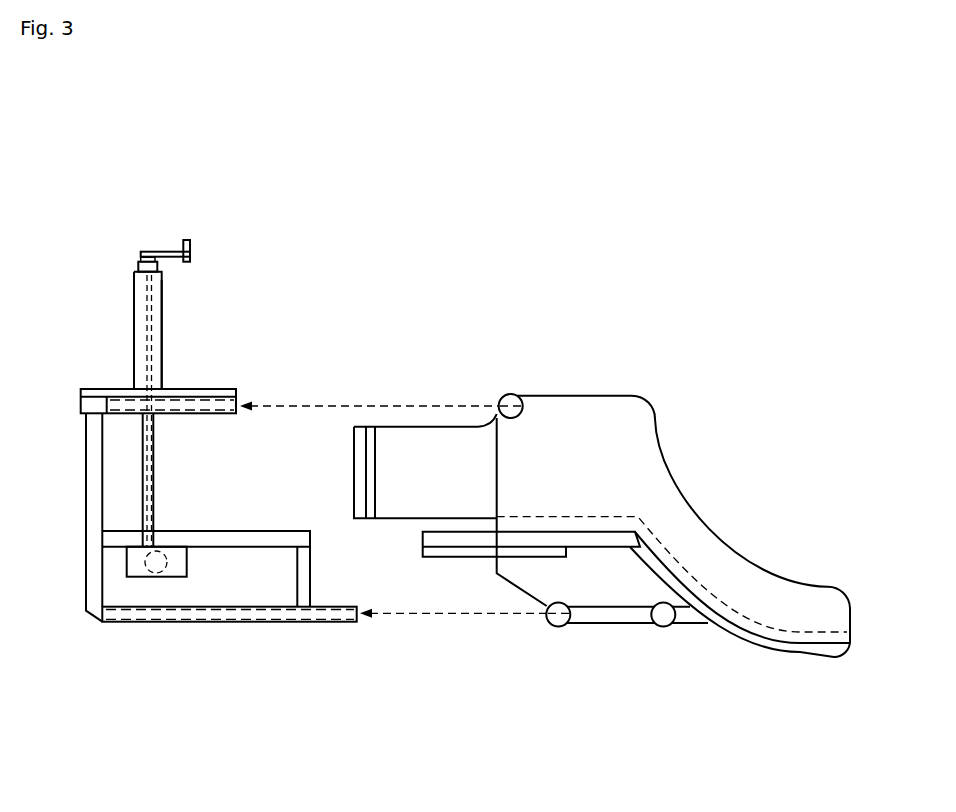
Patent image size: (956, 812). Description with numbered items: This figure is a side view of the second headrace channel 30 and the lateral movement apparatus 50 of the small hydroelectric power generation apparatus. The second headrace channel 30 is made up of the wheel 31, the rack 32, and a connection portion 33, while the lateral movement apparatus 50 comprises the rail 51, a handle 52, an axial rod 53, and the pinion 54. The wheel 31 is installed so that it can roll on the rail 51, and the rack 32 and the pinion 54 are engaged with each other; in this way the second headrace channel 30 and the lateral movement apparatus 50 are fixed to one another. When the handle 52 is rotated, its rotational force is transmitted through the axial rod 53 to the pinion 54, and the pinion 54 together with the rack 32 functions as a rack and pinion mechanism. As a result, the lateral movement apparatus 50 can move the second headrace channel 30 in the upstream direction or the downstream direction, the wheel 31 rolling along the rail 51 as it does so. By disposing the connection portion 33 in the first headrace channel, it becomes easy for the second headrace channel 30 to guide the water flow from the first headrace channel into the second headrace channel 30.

The second headrace channel 30 is at (574, 176).
The wheel 31 is at (512, 393).
The rack 32 is at (472, 558).
The connection portion 33 is at (428, 426).
The lateral movement apparatus 50 is at (148, 176).
The rail 51 is at (198, 400).
The handle 52 is at (187, 240).
The axial rod 53 is at (145, 333).
The pinion 54 is at (156, 574).